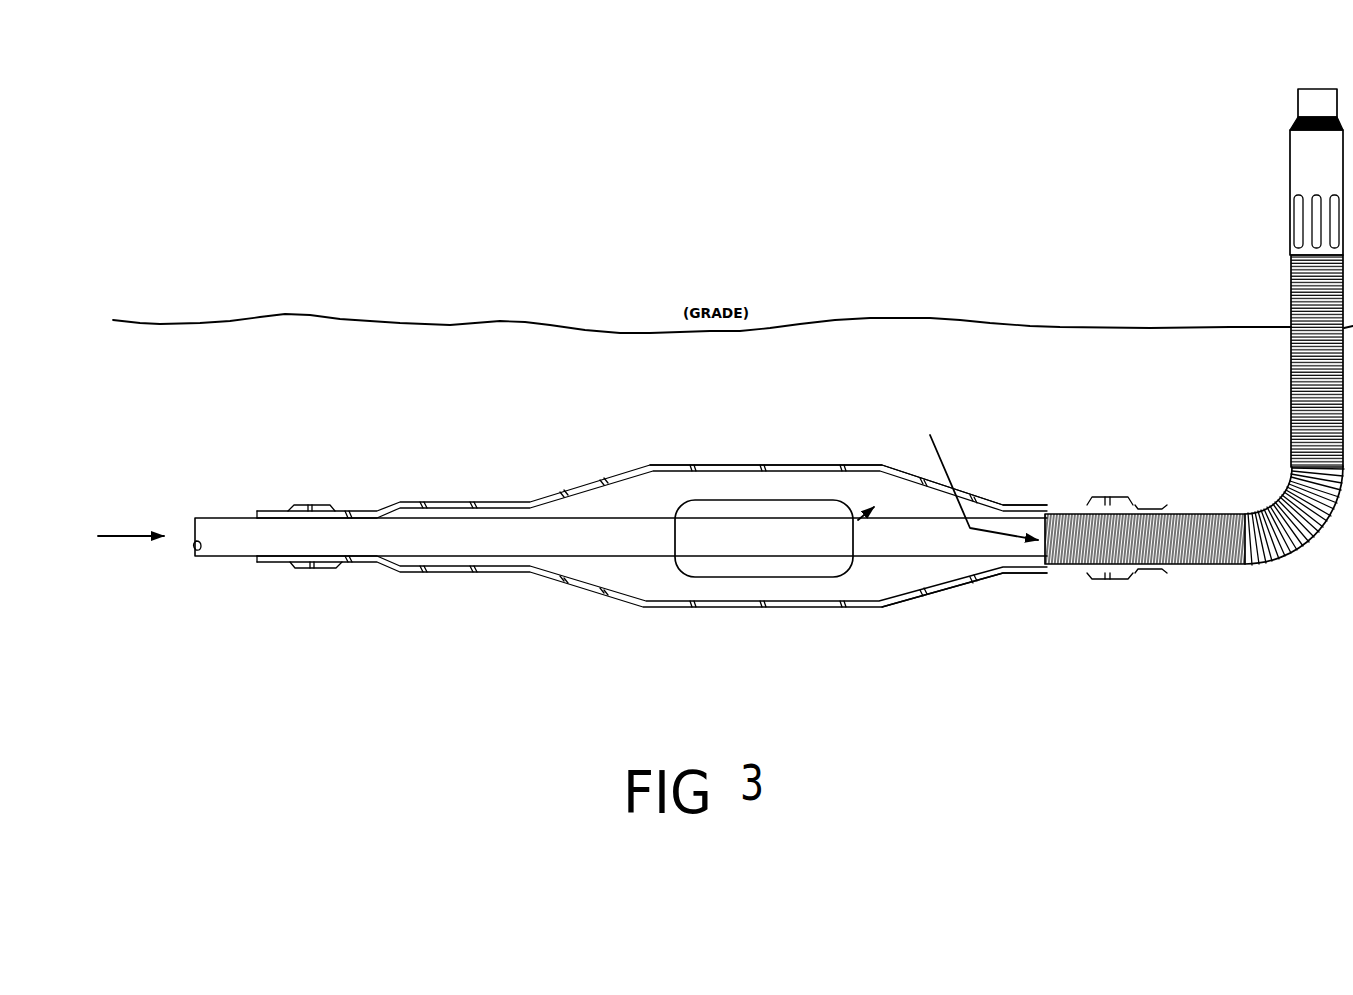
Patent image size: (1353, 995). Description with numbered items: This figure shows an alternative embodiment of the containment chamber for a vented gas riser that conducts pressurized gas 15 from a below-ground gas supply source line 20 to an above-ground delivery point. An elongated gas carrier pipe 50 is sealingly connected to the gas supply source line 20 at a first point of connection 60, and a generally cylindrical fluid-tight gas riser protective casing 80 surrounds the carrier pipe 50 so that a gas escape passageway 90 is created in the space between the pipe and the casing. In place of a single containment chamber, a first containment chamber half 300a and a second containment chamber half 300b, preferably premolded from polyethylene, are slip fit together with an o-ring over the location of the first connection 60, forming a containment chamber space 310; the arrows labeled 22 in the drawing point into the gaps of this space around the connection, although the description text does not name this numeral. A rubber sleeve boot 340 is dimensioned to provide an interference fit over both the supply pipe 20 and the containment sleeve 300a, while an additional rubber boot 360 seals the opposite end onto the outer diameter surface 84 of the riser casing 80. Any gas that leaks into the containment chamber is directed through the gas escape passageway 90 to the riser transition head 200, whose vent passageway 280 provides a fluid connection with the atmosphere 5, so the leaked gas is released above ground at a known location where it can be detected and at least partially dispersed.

The atmosphere 5 is at (1062, 251).
The pressurized gas 15 is at (126, 547).
The gas supply source line 20 is at (292, 536).
The annular gaps 22 is at (662, 510).
The gas carrier pipe 50 is at (918, 535).
The first point of connection 60 is at (766, 542).
The gas riser protective casing 80 is at (1272, 550).
The casing outer diameter 84 is at (1197, 572).
The gas escape passageway 90 is at (971, 458).
The riser transition head 200 is at (1310, 158).
The vent passageway 280 is at (1352, 300).
The first containment chamber half 300a is at (531, 507).
The second containment chamber half 300b is at (820, 470).
The containment chamber space 310 is at (606, 570).
The rubber sleeve boot 340 is at (307, 505).
The rubber boot 360 is at (1135, 505).